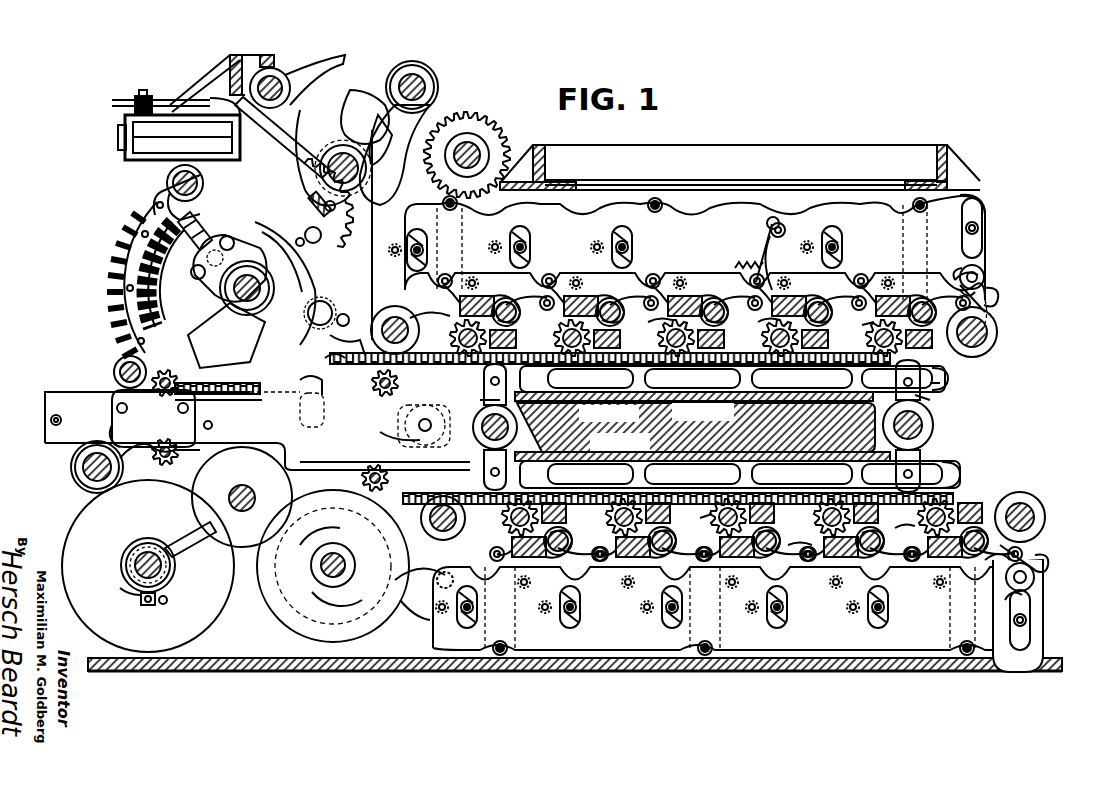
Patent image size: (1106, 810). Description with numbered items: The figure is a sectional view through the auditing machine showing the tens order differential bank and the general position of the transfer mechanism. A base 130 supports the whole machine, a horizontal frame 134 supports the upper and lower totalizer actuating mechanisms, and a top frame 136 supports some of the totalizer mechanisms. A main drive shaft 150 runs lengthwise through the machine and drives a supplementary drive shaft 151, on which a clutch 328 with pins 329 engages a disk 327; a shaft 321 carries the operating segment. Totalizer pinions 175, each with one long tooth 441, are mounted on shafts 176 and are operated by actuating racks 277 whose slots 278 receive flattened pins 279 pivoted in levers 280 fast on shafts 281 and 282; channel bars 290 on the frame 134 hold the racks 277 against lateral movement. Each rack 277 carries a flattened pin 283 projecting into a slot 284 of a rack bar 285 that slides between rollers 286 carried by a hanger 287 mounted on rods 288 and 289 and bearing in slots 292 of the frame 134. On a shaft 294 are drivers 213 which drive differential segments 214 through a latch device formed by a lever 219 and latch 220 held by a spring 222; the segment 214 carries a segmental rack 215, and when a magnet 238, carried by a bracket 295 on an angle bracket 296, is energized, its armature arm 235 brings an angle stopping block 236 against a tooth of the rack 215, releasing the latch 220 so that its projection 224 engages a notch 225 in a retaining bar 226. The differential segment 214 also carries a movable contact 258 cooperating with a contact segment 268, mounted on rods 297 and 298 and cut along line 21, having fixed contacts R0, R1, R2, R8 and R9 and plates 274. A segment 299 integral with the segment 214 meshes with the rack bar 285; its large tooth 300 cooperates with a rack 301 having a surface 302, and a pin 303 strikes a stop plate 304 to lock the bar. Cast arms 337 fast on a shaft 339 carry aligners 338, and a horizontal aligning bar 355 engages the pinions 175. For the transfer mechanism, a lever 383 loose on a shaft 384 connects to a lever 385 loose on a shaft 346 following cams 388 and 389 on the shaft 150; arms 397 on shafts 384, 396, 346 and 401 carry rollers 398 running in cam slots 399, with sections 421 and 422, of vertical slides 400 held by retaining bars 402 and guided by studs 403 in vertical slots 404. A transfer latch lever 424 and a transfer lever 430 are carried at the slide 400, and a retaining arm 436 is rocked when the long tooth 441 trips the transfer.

The base 130 is at (578, 676).
The top frame 136 is at (681, 152).
The vertical slide 400 is at (870, 638).
The retaining bars 402 is at (950, 648).
The transfer latch lever 424 is at (585, 636).
The transfer lever 430 is at (770, 240).
The horizontal aligning bar 355 is at (612, 517).
The long tooth 441 is at (715, 524).
The retaining arm 436 is at (724, 426).
The cast arms 337 is at (856, 590).
The aligner 338 is at (719, 428).
The shaft 339 is at (825, 422).
The totalizer pinions 175 is at (773, 418).
The shaft 346 is at (468, 525).
The shaft 176 is at (862, 372).
The channel bars 290 is at (684, 498).
The slots 292 is at (702, 426).
The horizontal frame 134 is at (703, 412).
The shaft 282 is at (934, 422).
The levers 280 is at (916, 456).
The shaft 281 is at (482, 428).
The actuating racks 277 is at (955, 478).
The slots 278 is at (957, 483).
The flattened pins 279 is at (920, 488).
The shaft 396 is at (986, 335).
The cam slots 399 is at (1040, 556).
The roller 398 is at (1036, 580).
The slot sections 422 is at (1046, 563).
The arms 397 is at (1010, 556).
The slot sections 421 is at (1008, 588).
The studs 403 is at (1035, 622).
The vertical slots 404 is at (1025, 650).
The shaft 401 is at (1020, 504).
The shaft 384 is at (450, 338).
The magnet 238 is at (128, 131).
The bracket 295 is at (214, 78).
The angle bracket 296 is at (243, 60).
The armature arm 235 is at (295, 180).
The rod 289 is at (328, 166).
The angle stopping block 236 is at (322, 198).
The rod 298 is at (178, 183).
The contact segment 268 is at (160, 200).
The movable contact 258 is at (196, 212).
The sector gear 21 is at (150, 225).
The fixed contact R-9 R9 is at (142, 213).
The fixed contact R-8 R8 is at (132, 228).
The fixed contact R-2 R2 is at (112, 305).
The fixed contact R-1 R1 is at (120, 320).
The fixed contact R-0 R0 is at (128, 345).
The plates 274 is at (120, 338).
The large tooth 300 is at (124, 358).
The shaft 294 is at (232, 291).
The driver 213 is at (252, 246).
The differential segment 214 is at (272, 226).
The spring 222 is at (309, 224).
The segmental rack 215 is at (352, 265).
The lever 219 is at (245, 332).
The latch 220 is at (320, 355).
The projection 224 is at (318, 371).
The notch 225 is at (331, 362).
The retaining bar 226 is at (308, 389).
The segment 299 is at (240, 398).
The rod 297 is at (118, 372).
The rollers 286 is at (385, 482).
The rack bar 285 is at (55, 392).
The pin 303 is at (50, 419).
The surface 302 is at (182, 410).
The rack 301 is at (120, 425).
The stop plate 304 is at (212, 426).
The hanger 287 is at (80, 460).
The rod 288 is at (78, 471).
The flattened pin 283 is at (312, 427).
The slot 284 is at (345, 420).
The lever 383 is at (413, 425).
The lever 385 is at (432, 445).
The disk 327 is at (78, 516).
The supplementary drive shaft 151 is at (135, 563).
The clutch 328 is at (140, 600).
The pins 329 is at (160, 603).
The shaft 321 is at (252, 506).
The cam 388 is at (300, 630).
The main drive shaft 150 is at (333, 558).
The cam 389 is at (392, 627).